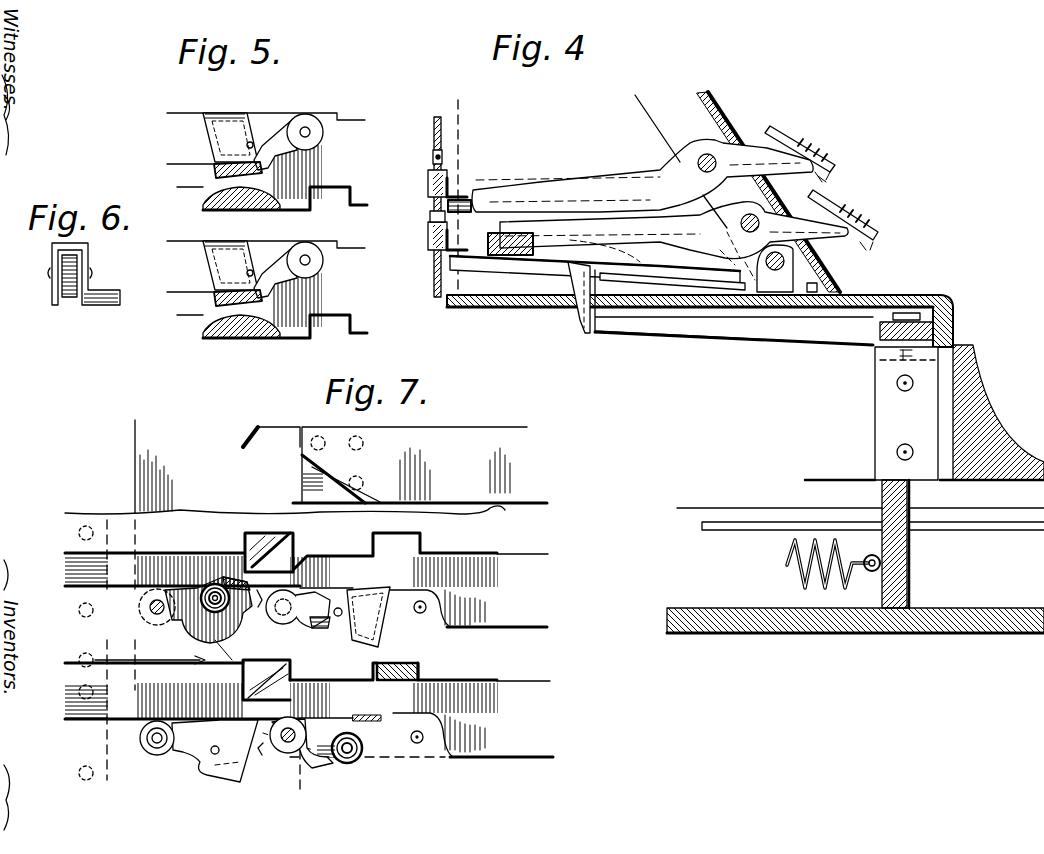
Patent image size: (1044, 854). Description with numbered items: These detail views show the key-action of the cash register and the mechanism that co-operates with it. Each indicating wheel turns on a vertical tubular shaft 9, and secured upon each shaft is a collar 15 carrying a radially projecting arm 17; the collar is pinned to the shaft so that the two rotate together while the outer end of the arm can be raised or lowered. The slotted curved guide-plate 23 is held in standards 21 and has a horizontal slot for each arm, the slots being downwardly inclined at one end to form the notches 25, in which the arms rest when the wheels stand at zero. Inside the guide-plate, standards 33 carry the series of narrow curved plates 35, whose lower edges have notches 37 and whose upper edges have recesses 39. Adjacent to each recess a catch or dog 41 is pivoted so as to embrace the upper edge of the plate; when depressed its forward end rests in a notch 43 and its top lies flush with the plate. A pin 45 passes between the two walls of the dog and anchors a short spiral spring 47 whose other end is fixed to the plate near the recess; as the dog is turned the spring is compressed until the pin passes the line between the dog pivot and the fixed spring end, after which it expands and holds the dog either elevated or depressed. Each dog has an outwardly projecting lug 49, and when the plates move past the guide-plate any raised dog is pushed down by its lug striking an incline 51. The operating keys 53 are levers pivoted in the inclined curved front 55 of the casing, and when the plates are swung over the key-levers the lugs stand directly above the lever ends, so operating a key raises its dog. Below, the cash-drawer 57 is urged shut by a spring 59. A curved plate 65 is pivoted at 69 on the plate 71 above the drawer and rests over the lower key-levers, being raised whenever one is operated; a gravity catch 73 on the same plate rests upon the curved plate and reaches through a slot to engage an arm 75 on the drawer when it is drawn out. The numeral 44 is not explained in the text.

In FIG. 4, the tubular shaft 9 is at (454, 191).
In FIG. 7, the collar 15 is at (218, 747).
In FIG. 7, the radially projecting arm 17 is at (362, 594).
In FIG. 7, the standards 21 is at (150, 452).
In FIG. 7, the slotted curved guide-plate 23 is at (421, 592).
In FIG. 7, the notches 25 is at (258, 442).
In FIG. 7, the standards 33 is at (84, 636).
In FIG. 5, the narrow curved plates 35 is at (348, 225).
In FIG. 4, the narrow curved plates 35 is at (434, 128).
In FIG. 7, the narrow curved plates 35 is at (305, 620).
In FIG. 5, the notches 37 is at (332, 198).
In FIG. 4, the notches 37 is at (433, 156).
In FIG. 7, the notches 37 is at (405, 550).
In FIG. 7, the recesses 39 is at (230, 653).
In FIG. 5, the catches or dogs 41 is at (235, 138).
In FIG. 6, the catches or dogs 41 is at (88, 268).
In FIG. 4, the catches or dogs 41 is at (450, 170).
In FIG. 7, the catches or dogs 41 is at (264, 687).
In FIG. 6, the notches 43 is at (50, 274).
In FIG. 7, the notches 43 is at (262, 620).
In FIG. 4, the stop piece 44 is at (460, 210).
In FIG. 5, the pin 45 is at (272, 206).
In FIG. 7, the pin 45 is at (185, 628).
In FIG. 6, the spiral spring 47 is at (69, 298).
In FIG. 7, the spiral spring 47 is at (200, 590).
In FIG. 5, the outwardly projecting lug 49 is at (214, 166).
In FIG. 6, the outwardly projecting lug 49 is at (112, 295).
In FIG. 4, the outwardly projecting lug 49 is at (466, 198).
In FIG. 7, the inclines 51 is at (302, 478).
In FIG. 5, the operating keys 53 is at (210, 208).
In FIG. 4, the operating keys 53 is at (606, 182).
In FIG. 4, the inclined curved front 55 is at (728, 118).
In FIG. 4, the cash-drawer 57 is at (885, 500).
In FIG. 4, the spring 59 is at (787, 565).
In FIG. 4, the curved plate 65 is at (498, 255).
In FIG. 4, the pivot 69 is at (688, 286).
In FIG. 4, the plate 71 is at (862, 295).
In FIG. 4, the gravity catch 73 is at (584, 240).
In FIG. 4, the arm 75 is at (748, 340).